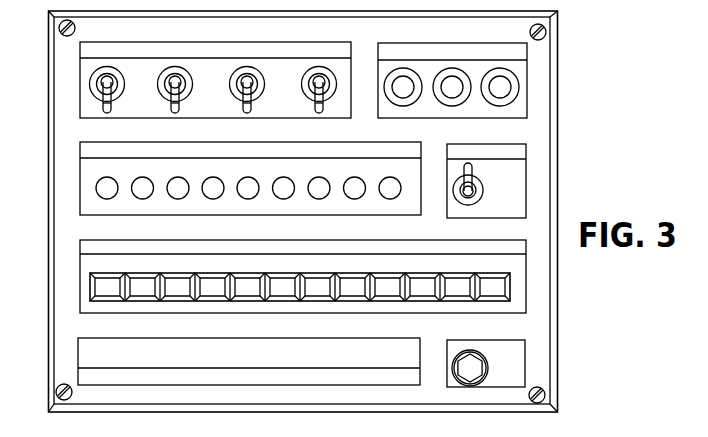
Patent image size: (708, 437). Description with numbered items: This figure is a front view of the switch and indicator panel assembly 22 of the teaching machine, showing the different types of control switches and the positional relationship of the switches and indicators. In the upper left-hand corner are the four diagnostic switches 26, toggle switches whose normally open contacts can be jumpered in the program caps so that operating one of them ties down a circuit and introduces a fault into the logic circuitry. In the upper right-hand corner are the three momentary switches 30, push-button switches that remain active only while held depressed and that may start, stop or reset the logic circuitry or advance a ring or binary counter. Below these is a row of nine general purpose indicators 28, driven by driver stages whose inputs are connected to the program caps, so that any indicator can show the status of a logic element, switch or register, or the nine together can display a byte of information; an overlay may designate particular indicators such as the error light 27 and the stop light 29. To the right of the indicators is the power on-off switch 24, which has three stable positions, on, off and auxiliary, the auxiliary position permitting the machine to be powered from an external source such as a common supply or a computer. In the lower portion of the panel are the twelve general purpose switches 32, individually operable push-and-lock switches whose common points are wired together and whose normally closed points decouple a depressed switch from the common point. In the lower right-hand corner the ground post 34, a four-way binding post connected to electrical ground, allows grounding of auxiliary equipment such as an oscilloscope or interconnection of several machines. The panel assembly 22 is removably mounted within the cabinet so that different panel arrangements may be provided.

The switch and indicator panel assembly 22 is at (558, 314).
The power on-off switch 24 is at (516, 189).
The diagnostic switches 26 is at (89, 84).
The error light 27 is at (107, 199).
The general purpose indicators 28 is at (221, 190).
The stop light 29 is at (248, 199).
The momentary switches 30 is at (521, 80).
The general purpose switches 32 is at (88, 284).
The ground post 34 is at (488, 369).